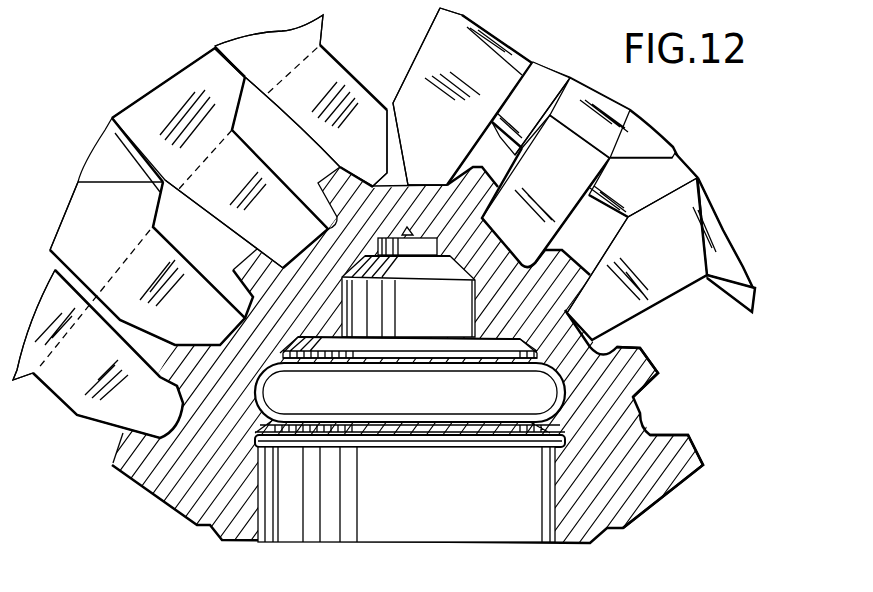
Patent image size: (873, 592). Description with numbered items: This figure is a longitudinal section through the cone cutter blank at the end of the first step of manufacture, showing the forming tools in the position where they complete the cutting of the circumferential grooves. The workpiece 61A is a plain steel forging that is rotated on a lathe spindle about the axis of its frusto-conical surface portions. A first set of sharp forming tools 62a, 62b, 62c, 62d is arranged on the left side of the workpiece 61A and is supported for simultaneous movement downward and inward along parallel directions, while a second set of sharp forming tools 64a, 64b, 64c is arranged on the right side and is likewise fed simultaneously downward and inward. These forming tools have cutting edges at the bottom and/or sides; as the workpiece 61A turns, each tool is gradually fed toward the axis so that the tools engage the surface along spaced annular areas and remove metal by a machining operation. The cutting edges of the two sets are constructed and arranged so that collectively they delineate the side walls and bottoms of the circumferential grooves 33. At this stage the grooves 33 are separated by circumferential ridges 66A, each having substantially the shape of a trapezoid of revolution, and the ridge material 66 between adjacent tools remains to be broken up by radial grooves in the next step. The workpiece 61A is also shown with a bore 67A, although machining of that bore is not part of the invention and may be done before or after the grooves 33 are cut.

The circumferential grooves 33 is at (615, 340).
The workpiece 61A is at (143, 493).
The forming tool 62a is at (355, 98).
The forming tool 62b is at (298, 190).
The forming tool 62c is at (205, 327).
The forming tool 62d is at (110, 415).
The forming tool 64a is at (450, 145).
The forming tool 64b is at (530, 237).
The forming tool 64c is at (583, 305).
The tab 66 is at (242, 263).
The circumferential ridges 66A is at (650, 364).
The bore 67A is at (257, 510).